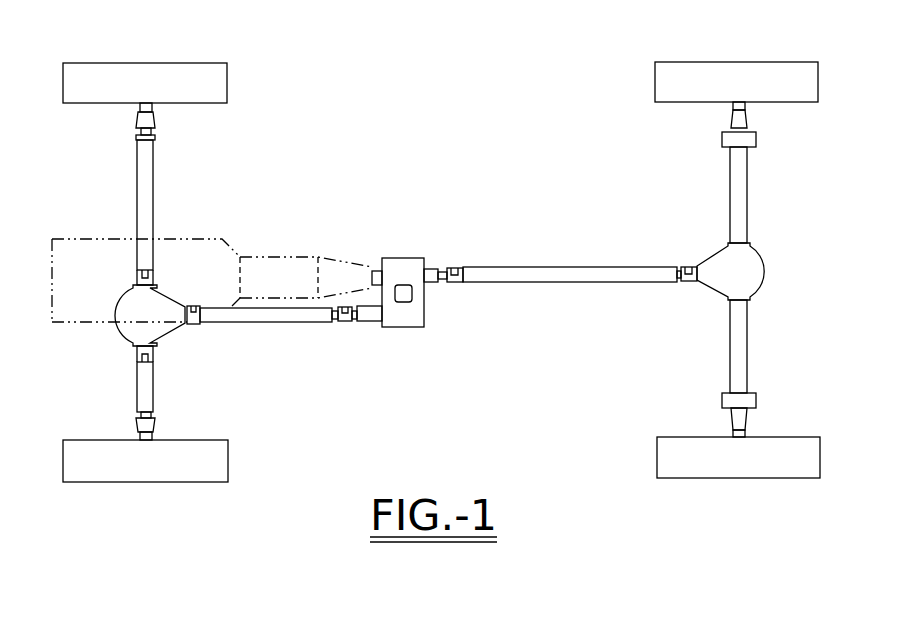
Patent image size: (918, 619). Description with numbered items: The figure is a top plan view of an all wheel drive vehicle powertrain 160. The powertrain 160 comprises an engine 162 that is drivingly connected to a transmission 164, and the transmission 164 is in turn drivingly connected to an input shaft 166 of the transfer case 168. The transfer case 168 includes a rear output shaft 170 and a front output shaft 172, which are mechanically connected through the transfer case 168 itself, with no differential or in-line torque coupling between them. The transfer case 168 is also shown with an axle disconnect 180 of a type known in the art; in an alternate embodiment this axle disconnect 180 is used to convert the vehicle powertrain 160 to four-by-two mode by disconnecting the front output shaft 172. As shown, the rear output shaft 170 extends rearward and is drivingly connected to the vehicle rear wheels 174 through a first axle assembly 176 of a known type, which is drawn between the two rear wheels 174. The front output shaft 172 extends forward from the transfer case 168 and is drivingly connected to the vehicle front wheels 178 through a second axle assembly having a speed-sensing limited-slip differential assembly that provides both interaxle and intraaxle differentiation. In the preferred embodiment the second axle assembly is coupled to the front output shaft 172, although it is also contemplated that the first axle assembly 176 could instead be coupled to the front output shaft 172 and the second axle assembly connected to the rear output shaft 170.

The all wheel drive vehicle powertrain 160 is at (440, 132).
The engine 162 is at (180, 240).
The transmission 164 is at (281, 265).
The input shaft 166 is at (380, 266).
The transfer case 168 is at (426, 325).
The rear output shaft 170 is at (430, 284).
The front output shaft 172 is at (368, 321).
The vehicle rear wheels 174 is at (725, 62).
The first axle assembly 176 is at (772, 247).
The vehicle front wheels 178 is at (190, 62).
The axle disconnect 180 is at (406, 293).